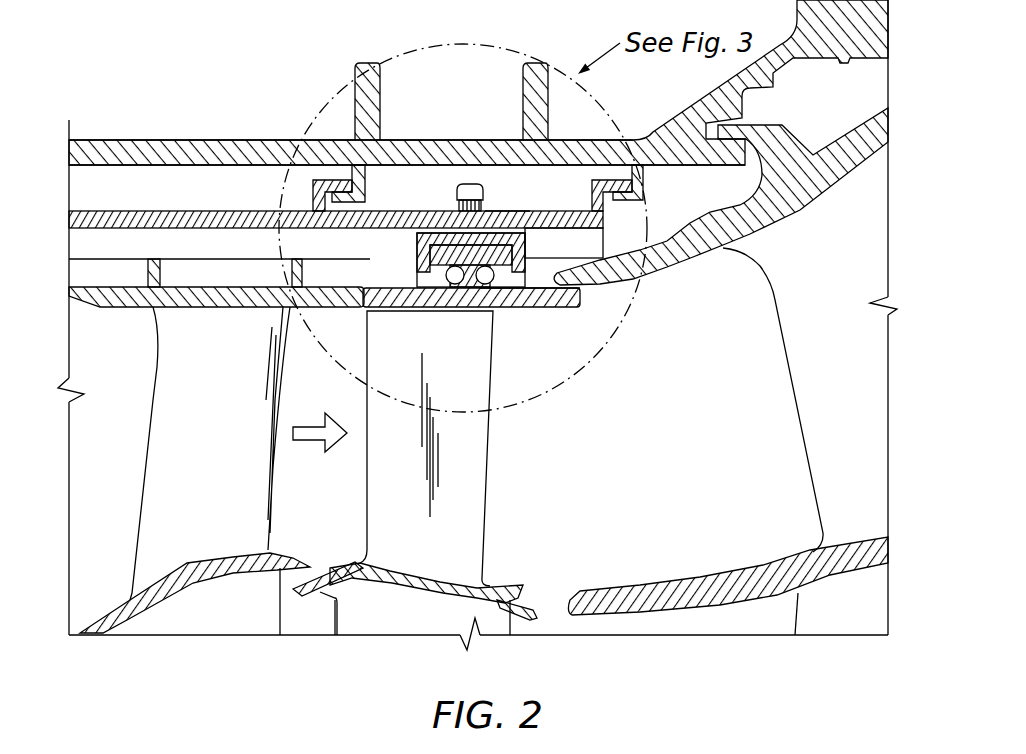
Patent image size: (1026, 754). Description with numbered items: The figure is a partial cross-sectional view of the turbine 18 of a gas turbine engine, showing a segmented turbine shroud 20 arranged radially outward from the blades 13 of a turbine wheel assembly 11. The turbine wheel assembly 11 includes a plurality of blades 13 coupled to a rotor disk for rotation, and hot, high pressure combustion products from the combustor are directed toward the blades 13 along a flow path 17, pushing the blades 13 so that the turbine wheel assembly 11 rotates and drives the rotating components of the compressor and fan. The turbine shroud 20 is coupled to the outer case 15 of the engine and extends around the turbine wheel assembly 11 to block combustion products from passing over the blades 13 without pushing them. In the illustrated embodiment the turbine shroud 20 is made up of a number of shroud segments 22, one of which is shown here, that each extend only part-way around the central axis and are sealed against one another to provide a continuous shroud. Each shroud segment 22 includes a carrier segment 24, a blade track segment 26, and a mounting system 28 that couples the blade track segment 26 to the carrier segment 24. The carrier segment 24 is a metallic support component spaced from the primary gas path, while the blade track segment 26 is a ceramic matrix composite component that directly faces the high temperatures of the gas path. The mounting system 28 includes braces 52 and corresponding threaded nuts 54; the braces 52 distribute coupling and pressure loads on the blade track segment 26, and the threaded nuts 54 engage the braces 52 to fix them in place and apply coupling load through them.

The turbine wheel assembly 11 is at (575, 509).
The blades 13 is at (462, 486).
The outer case 15 is at (236, 129).
The flow path 17 is at (326, 518).
The turbine 18 is at (173, 108).
The turbine shroud 20 is at (603, 308).
The shroud segment 22 is at (572, 324).
The carrier segment 24 is at (548, 201).
The blade track segment 26 is at (514, 325).
The mounting system 28 is at (436, 186).
The braces 52 is at (405, 260).
The threaded nuts 54 is at (503, 200).